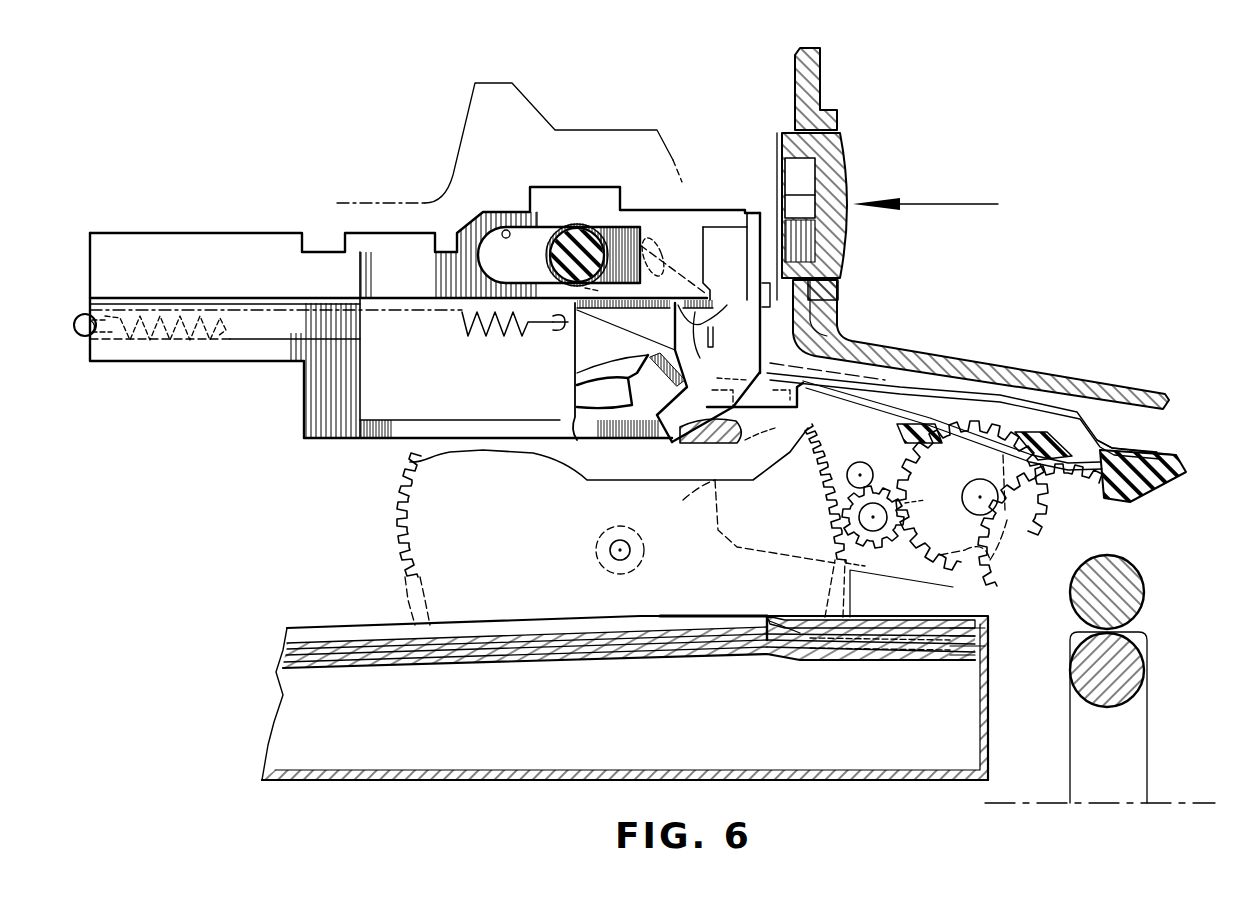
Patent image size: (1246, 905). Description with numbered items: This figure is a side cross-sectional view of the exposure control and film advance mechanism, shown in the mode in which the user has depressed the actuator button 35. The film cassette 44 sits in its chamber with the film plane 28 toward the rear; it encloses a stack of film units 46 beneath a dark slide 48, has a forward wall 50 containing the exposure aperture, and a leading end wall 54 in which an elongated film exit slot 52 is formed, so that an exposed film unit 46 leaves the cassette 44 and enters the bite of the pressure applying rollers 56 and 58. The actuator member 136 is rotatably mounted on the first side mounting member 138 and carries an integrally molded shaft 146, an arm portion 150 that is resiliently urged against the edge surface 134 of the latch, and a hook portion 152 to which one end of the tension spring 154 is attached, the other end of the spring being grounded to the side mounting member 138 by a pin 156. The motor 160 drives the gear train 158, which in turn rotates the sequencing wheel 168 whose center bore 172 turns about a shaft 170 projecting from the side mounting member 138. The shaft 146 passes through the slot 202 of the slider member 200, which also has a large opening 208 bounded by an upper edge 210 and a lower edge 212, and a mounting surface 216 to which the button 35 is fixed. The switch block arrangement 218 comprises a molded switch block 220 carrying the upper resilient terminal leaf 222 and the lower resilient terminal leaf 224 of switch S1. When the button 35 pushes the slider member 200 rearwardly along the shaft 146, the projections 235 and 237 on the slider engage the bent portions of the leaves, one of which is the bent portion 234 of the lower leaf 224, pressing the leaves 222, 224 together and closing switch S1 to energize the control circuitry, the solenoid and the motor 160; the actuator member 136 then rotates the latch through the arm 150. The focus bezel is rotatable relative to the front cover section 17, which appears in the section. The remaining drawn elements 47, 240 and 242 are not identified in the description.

The front cover section 17 is at (905, 350).
The film plane 28 is at (327, 643).
The actuator button 35 is at (848, 152).
The film cassette 44 is at (996, 704).
The film units 46 is at (640, 640).
The ribbon 47 is at (840, 640).
The dark slide 48 is at (480, 642).
The forward wall 50 is at (888, 627).
The film exit slot 52 is at (996, 634).
The leading end wall 54 is at (996, 732).
The pressure applying roller 56 is at (1136, 582).
The pressure applying roller 58 is at (1138, 680).
The edge surface 134 is at (726, 330).
The actuator member 136 is at (580, 384).
The first side mounting member 138 is at (455, 174).
The shaft 146 is at (568, 228).
The arm portion 150 is at (652, 334).
The hook portion 152 is at (563, 340).
The tension spring 154 is at (196, 342).
The pin 156 is at (80, 335).
The gear train 158 is at (928, 427).
The motor 160 is at (722, 488).
The sequencing wheel 168 is at (395, 524).
The shaft 170 is at (625, 526).
The center bore 172 is at (608, 548).
The slider member 200 is at (476, 217).
The slot 202 is at (505, 230).
The large opening 208 is at (412, 438).
The upper edge 210 is at (396, 298).
The lower edge 212 is at (452, 400).
The mounting surface 216 is at (785, 172).
The switch block arrangement 218 is at (1100, 436).
The molded switch block 220 is at (1135, 490).
The upper resilient terminal leaf 222 is at (875, 368).
The lower resilient terminal leaf 224 is at (882, 386).
The bent portion 234 is at (814, 420).
The projection 235 is at (742, 440).
The projection 237 is at (790, 430).
The pawl 240 is at (672, 440).
The cam surface 242 is at (609, 454).
The switch S1 is at (1028, 399).